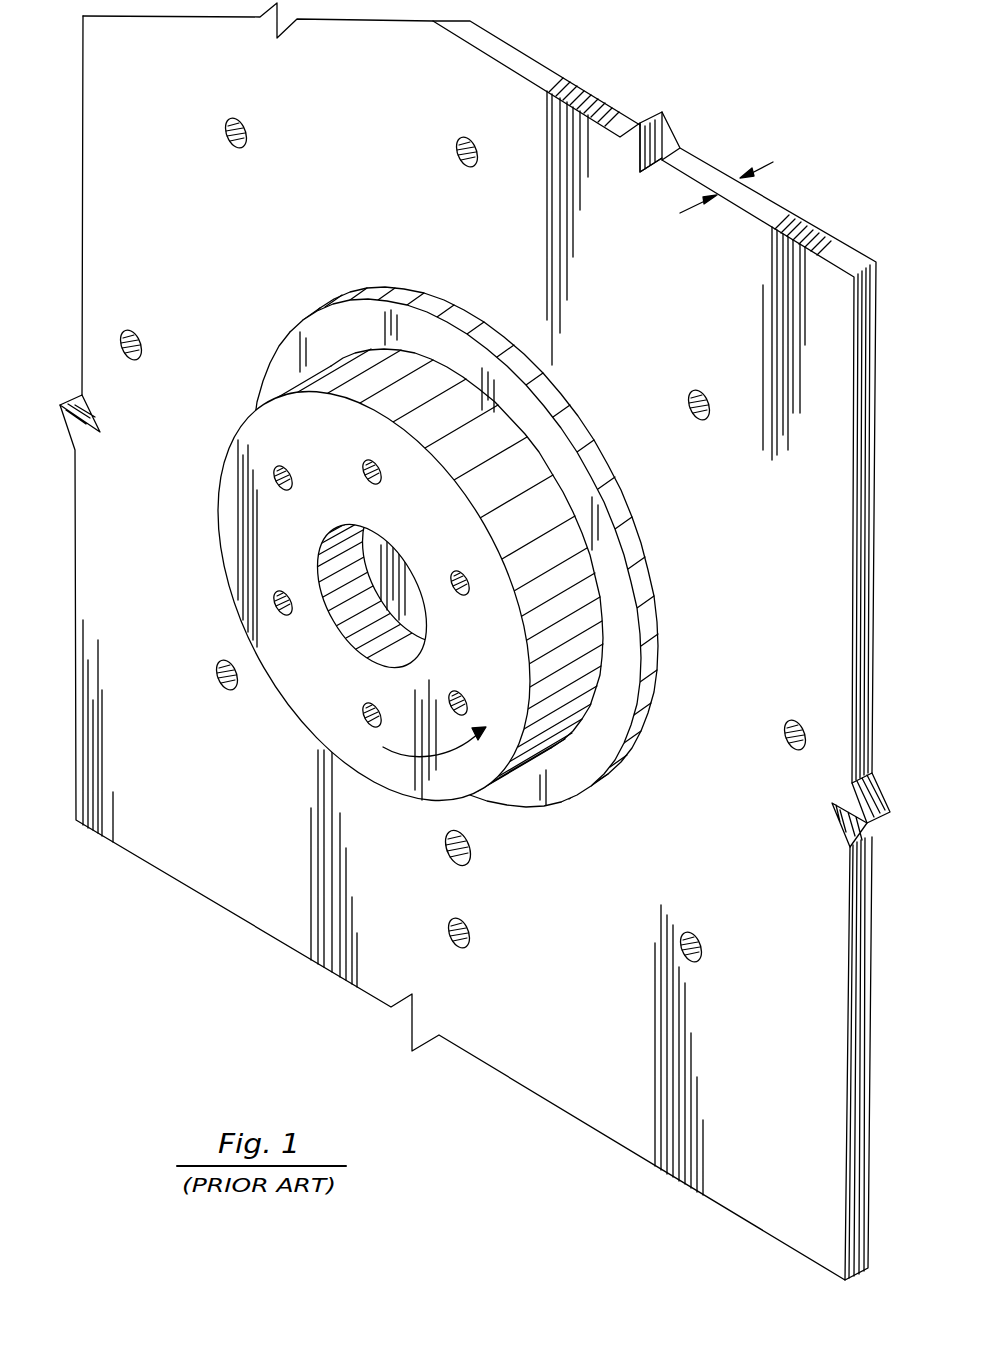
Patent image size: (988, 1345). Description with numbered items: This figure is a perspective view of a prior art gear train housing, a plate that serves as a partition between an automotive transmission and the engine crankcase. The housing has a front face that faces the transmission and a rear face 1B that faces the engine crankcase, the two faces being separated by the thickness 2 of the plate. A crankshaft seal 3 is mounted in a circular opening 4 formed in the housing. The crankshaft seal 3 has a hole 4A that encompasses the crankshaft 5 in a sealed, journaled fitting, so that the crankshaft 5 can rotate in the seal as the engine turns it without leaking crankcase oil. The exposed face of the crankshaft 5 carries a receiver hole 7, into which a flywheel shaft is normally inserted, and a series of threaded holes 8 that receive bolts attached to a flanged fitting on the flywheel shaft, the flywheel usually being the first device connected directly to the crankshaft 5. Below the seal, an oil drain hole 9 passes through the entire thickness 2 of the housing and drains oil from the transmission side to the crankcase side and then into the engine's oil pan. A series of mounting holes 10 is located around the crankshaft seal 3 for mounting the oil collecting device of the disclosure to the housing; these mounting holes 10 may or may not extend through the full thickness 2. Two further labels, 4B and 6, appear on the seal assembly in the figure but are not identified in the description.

The rear face 1B is at (786, 206).
The thickness 2 is at (727, 185).
The crankshaft seal 3 is at (537, 433).
The circular opening 4 is at (654, 642).
The hole 4A is at (567, 530).
The ring rear surface 4B is at (642, 545).
The crankshaft 5 is at (263, 516).
The ring edge 6 is at (574, 750).
The receiver hole 7 is at (364, 614).
The threaded holes 8 is at (360, 474).
The oil drain hole 9 is at (473, 850).
The mounting holes 10 is at (233, 147).